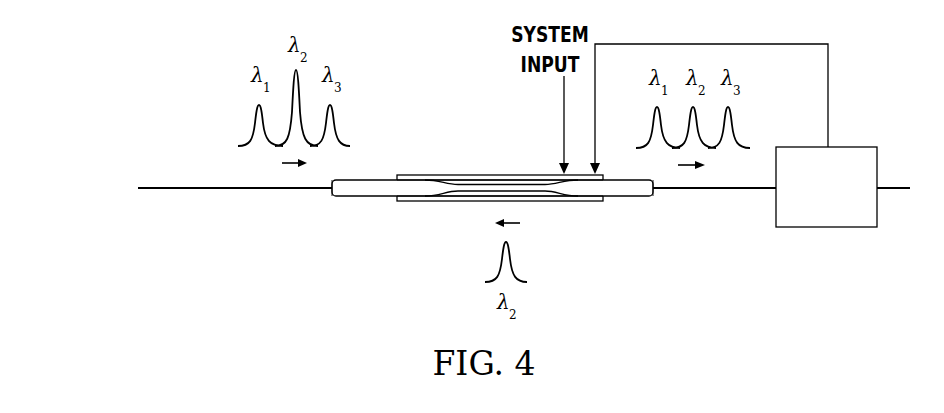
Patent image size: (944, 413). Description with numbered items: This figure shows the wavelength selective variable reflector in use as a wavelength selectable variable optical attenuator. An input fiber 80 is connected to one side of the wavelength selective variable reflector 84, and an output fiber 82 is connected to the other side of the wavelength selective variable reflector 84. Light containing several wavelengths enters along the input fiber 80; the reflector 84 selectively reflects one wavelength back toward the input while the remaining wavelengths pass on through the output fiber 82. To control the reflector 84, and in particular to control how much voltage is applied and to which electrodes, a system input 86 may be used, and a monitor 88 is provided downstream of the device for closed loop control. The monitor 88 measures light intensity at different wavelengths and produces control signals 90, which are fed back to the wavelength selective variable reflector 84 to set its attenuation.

The input fiber 80 is at (244, 230).
The output fiber 82 is at (755, 224).
The wavelength selective variable reflector 84 is at (508, 134).
The system input 86 is at (562, 95).
The monitor 88 is at (843, 187).
The control signals 90 is at (863, 81).